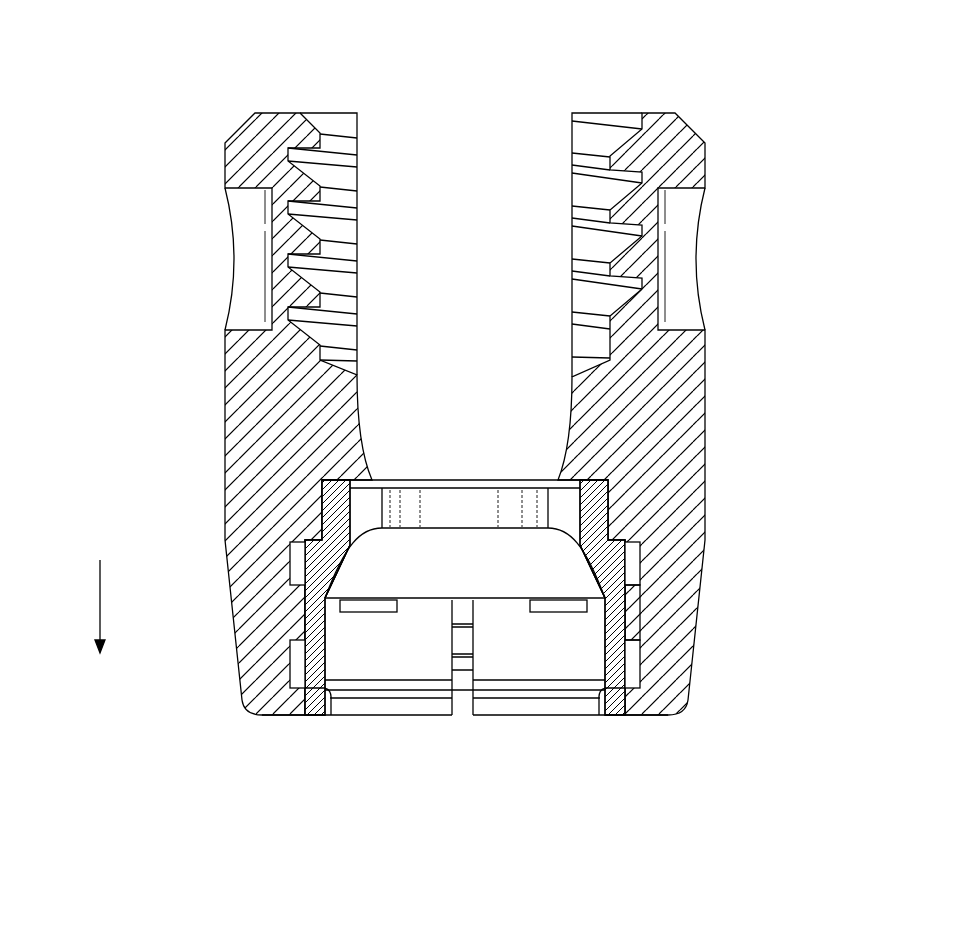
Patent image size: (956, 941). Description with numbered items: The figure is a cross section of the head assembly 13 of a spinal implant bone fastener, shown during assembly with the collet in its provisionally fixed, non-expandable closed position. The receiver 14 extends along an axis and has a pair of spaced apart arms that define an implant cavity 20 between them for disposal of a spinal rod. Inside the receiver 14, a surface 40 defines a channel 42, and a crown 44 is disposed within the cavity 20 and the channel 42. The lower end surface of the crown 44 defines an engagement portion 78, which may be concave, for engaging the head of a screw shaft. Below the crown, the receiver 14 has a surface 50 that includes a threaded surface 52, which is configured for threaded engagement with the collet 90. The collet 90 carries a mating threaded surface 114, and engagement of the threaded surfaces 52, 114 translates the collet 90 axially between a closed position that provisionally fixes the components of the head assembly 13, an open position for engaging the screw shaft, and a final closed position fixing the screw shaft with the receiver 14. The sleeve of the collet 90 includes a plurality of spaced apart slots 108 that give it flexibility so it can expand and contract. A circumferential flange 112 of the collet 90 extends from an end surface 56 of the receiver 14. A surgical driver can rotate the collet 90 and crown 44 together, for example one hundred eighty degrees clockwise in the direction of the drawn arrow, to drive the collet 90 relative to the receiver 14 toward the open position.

The head assembly 13 is at (118, 106).
The implant cavity 20 is at (514, 155).
The receiver 14 is at (687, 158).
The channel 42 is at (606, 480).
The surface 40 is at (608, 505).
The crown 44 is at (603, 542).
The engagement portion 78 is at (343, 570).
The surface 50 is at (305, 608).
The threaded surface 52 is at (312, 621).
The threaded surface 114 is at (633, 627).
The collet 90 is at (343, 658).
The slots 108 is at (460, 667).
The end surface 56 is at (268, 713).
The circumferential flange 112 is at (307, 700).